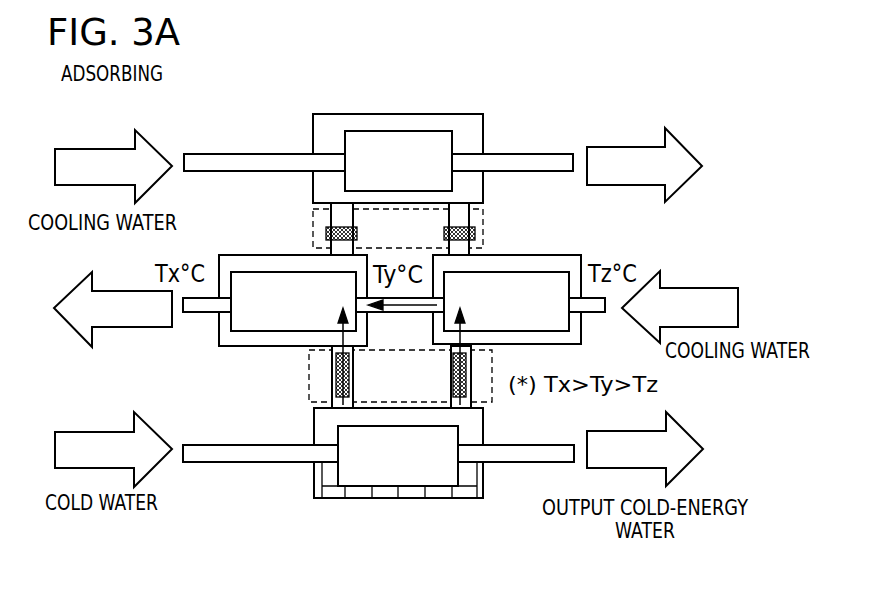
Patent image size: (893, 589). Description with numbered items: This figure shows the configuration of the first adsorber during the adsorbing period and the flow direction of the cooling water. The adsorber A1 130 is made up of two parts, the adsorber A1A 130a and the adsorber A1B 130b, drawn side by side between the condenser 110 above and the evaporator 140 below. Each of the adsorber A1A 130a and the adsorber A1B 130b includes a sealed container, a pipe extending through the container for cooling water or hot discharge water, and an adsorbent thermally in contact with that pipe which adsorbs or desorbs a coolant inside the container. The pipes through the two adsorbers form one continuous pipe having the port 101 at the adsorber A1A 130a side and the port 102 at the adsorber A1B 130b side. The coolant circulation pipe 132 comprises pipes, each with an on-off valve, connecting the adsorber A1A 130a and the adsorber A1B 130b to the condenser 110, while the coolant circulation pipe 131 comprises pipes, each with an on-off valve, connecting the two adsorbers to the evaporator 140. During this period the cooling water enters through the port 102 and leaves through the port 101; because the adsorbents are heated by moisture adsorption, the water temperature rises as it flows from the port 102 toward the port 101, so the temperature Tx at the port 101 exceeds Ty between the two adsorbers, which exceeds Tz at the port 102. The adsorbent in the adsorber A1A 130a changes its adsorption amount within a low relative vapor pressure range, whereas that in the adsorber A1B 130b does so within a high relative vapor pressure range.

The condenser 110 is at (458, 120).
The adsorber A1 130 is at (605, 215).
The adsorber A1A 130a is at (358, 259).
The adsorber A1B 130b is at (530, 263).
The coolant circulation pipe 131 is at (310, 383).
The coolant circulation pipe 132 is at (312, 220).
The evaporator 140 is at (323, 433).
The port 101 is at (202, 307).
The port 102 is at (597, 307).